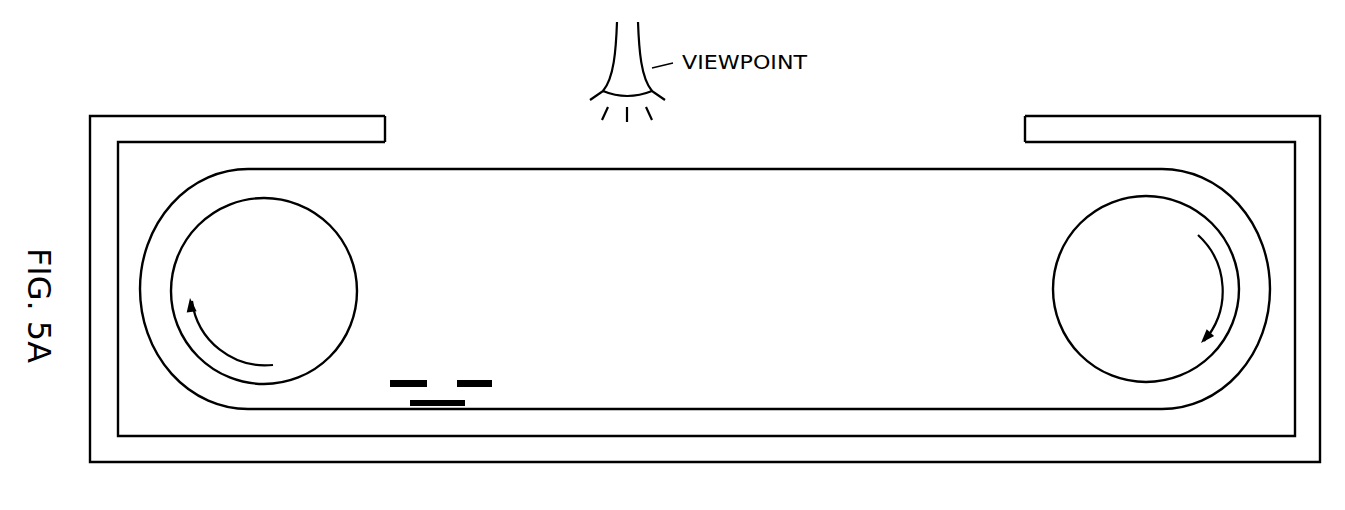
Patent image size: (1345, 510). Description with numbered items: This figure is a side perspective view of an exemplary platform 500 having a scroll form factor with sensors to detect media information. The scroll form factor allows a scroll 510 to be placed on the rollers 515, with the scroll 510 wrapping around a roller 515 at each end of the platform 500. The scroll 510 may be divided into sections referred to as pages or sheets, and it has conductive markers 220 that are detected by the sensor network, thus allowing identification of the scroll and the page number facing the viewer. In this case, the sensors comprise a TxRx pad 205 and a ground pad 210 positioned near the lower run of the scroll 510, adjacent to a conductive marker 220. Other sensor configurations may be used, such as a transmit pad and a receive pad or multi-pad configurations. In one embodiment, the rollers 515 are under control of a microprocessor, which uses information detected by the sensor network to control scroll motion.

The platform 500 is at (302, 130).
The scroll 510 is at (852, 168).
The rollers 515 is at (283, 270).
The ground pad 210 is at (395, 381).
The TxRx pad 205 is at (490, 381).
The conductive markers 220 is at (412, 407).